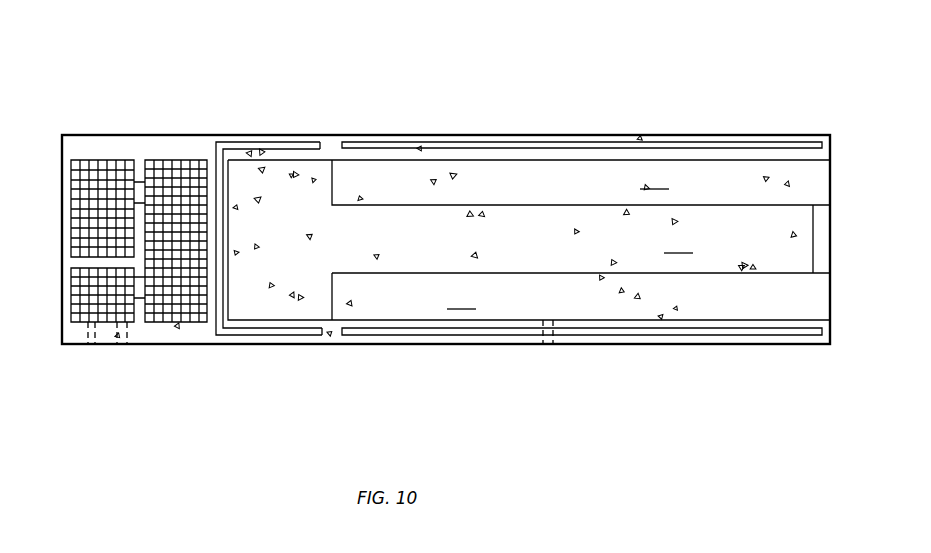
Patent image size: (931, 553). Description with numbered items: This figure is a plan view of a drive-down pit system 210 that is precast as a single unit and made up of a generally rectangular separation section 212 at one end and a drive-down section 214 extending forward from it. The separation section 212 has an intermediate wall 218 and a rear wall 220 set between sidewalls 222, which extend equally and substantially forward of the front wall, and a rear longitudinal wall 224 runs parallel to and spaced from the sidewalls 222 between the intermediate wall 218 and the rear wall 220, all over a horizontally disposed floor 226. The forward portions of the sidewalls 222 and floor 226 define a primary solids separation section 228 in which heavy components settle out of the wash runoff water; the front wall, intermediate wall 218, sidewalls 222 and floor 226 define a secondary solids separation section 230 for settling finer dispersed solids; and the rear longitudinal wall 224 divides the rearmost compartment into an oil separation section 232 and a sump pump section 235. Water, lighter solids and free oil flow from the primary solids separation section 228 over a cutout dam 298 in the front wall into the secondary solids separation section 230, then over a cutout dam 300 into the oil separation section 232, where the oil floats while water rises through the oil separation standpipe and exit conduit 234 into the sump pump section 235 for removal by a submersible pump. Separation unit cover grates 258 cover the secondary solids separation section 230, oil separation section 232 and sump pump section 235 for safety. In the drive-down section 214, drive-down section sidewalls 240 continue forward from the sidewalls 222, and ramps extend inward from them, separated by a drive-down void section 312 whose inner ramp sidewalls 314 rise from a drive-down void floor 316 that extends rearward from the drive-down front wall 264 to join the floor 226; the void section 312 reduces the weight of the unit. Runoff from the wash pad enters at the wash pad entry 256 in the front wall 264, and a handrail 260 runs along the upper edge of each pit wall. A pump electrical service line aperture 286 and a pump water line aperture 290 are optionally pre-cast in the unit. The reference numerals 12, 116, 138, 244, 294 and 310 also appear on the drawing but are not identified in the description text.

The stone/sheet-cutting machine 12 is at (207, 68).
The channel frame 116 is at (228, 185).
The aggregate filling 138 is at (293, 145).
The unitary drive-down pit system 210 is at (502, 86).
The separation section 212 is at (127, 260).
The drive-down section 214 is at (650, 110).
The intermediate wall 218 is at (141, 172).
The rear wall 220 is at (67, 207).
The sidewalls 222 is at (85, 142).
The rear longitudinal wall 224 is at (76, 268).
The floor 226 is at (332, 197).
The primary solids separation section 228 is at (230, 290).
The secondary solids separation section 230 is at (172, 322).
The oil separation section 232 is at (65, 162).
The oil separation standpipe and exit conduit 234 is at (72, 262).
The sump pump section 235 is at (70, 328).
The drive-down section sidewalls 240 is at (697, 136).
The upper rail bar 244 is at (472, 165).
The wash pad entry 256 is at (833, 172).
The separation unit cover grates 258 is at (187, 175).
The handrail 260 is at (565, 145).
The drive-down front wall 264 is at (853, 380).
The pump electrical service line aperture 286 is at (95, 345).
The pump water line aperture 290 is at (127, 345).
The fastener 294 is at (553, 338).
The cutout dam 298 is at (295, 310).
The cutout dam 300 is at (165, 195).
The insert block 310 is at (581, 240).
The drive-down void section 312 is at (581, 239).
The inner ramp sidewalls 314 is at (765, 200).
The drive-down void floor 316 is at (807, 238).